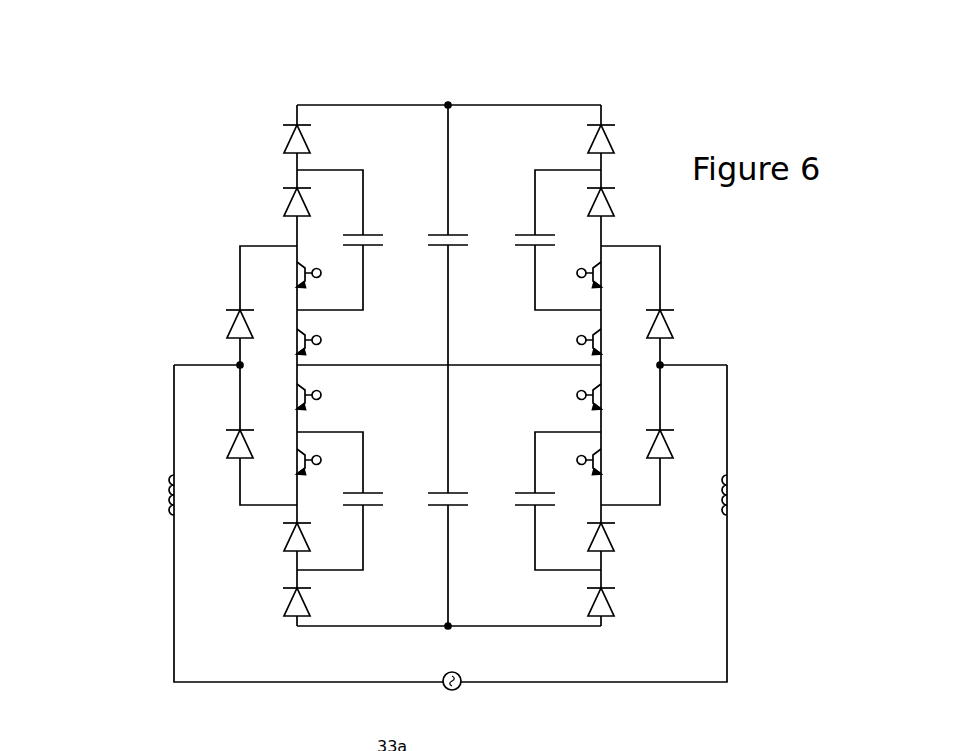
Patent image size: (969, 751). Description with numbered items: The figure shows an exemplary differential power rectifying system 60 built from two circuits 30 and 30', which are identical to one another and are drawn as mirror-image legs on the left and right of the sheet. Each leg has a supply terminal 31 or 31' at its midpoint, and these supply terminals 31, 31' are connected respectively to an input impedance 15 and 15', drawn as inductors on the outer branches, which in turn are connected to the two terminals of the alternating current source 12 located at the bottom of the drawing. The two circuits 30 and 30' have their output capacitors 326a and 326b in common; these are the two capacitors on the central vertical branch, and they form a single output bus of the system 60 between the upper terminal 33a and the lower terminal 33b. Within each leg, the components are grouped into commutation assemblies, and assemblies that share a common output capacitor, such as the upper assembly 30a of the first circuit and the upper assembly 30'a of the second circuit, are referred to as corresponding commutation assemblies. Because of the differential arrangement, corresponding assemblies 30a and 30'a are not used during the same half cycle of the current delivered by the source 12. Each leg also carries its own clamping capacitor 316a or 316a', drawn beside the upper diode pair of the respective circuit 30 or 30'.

The differential power rectifying system 60 is at (128, 224).
The circuit 30 is at (322, 319).
The circuit 30' is at (582, 318).
The commutation assembly 30a is at (418, 132).
The commutation assembly 30'a is at (561, 137).
The terminal 33a is at (449, 93).
The terminal 33b is at (449, 638).
The output capacitor 326a is at (459, 234).
The output capacitor 326b is at (459, 495).
The clamping capacitor 316a is at (351, 240).
The clamping capacitor of second leg 316a' is at (545, 240).
The supply terminal 31 is at (311, 372).
The supply terminal 31' is at (587, 372).
The input impedance 15 is at (146, 495).
The input impedance 15' is at (747, 495).
The alternating current source 12 is at (449, 693).